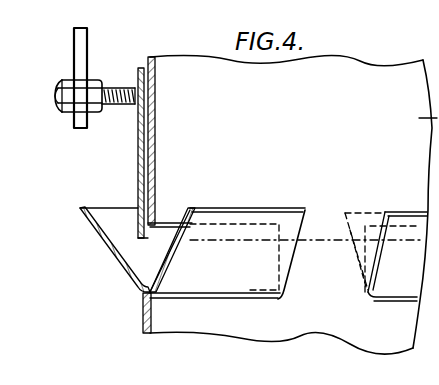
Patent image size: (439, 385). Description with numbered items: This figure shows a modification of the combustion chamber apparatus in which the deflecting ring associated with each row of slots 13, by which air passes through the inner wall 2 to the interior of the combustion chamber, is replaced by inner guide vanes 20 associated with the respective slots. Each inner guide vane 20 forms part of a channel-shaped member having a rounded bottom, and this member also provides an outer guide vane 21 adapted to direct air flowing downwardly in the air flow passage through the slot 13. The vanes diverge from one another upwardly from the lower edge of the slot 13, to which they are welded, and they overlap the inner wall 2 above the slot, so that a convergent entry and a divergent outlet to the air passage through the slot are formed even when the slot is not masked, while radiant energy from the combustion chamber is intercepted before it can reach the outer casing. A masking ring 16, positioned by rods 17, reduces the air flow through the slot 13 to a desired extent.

The inner wall 2 is at (143, 313).
The slots 13 is at (126, 251).
The masking ring 16 is at (137, 146).
The rods 17 is at (80, 45).
The inner guide vanes 20 is at (285, 253).
The outer guide vane 21 is at (102, 248).